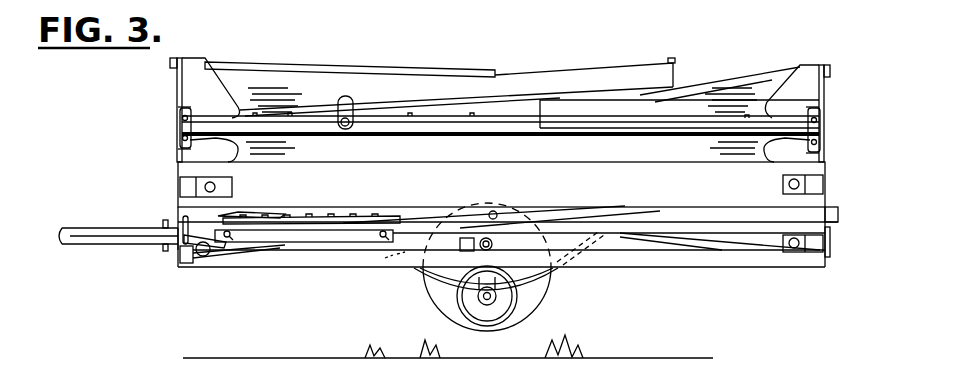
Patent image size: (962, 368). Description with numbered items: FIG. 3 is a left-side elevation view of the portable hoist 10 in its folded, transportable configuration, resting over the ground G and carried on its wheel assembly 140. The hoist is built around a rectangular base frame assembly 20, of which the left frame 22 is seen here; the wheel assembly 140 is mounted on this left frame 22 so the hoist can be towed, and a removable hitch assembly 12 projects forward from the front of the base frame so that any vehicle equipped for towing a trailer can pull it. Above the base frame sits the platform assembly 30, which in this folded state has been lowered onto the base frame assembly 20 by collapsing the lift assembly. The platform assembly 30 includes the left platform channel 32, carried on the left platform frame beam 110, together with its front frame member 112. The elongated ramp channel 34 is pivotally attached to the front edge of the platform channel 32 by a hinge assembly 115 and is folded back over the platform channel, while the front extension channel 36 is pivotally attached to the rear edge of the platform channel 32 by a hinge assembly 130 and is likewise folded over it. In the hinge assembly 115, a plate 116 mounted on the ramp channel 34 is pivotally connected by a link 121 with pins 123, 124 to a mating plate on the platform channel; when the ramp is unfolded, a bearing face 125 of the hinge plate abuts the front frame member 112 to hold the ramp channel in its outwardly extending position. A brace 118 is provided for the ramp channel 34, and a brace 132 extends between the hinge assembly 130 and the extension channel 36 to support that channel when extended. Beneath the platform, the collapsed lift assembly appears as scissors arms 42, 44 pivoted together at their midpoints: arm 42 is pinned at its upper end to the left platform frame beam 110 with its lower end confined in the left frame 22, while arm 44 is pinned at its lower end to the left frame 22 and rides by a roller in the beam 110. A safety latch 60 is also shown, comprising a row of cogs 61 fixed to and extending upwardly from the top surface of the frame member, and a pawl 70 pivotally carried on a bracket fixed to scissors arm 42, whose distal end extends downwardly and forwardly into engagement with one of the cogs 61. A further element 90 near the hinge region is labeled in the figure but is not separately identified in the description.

The portable hoist 10 is at (785, 55).
The removable hitch assembly 12 is at (73, 228).
The base frame assembly 20 is at (835, 232).
The left frame 22 is at (718, 270).
The platform assembly 30 is at (833, 176).
The platform channel 32 is at (499, 117).
The ramp channel 34 is at (574, 70).
The extension channel 36 is at (741, 97).
The scissors arm 42 is at (624, 218).
The scissors arm 44 is at (418, 207).
The safety latch 60 is at (305, 250).
The cogs 61 is at (315, 217).
The pawl 70 is at (242, 212).
The pivot lug 90 is at (355, 121).
The left platform frame beam 110 is at (657, 197).
The front frame member 112 is at (177, 236).
The hinge assembly 115 is at (195, 58).
The plate 116 is at (236, 88).
The brace 118 is at (445, 66).
The link 121 is at (181, 139).
The pin 123 is at (181, 118).
The pin 124 is at (175, 186).
The bearing face 125 is at (177, 88).
The hinge assembly 130 is at (822, 110).
The brace 132 is at (753, 72).
The wheel assembly 140 is at (553, 316).
The ground G is at (322, 358).